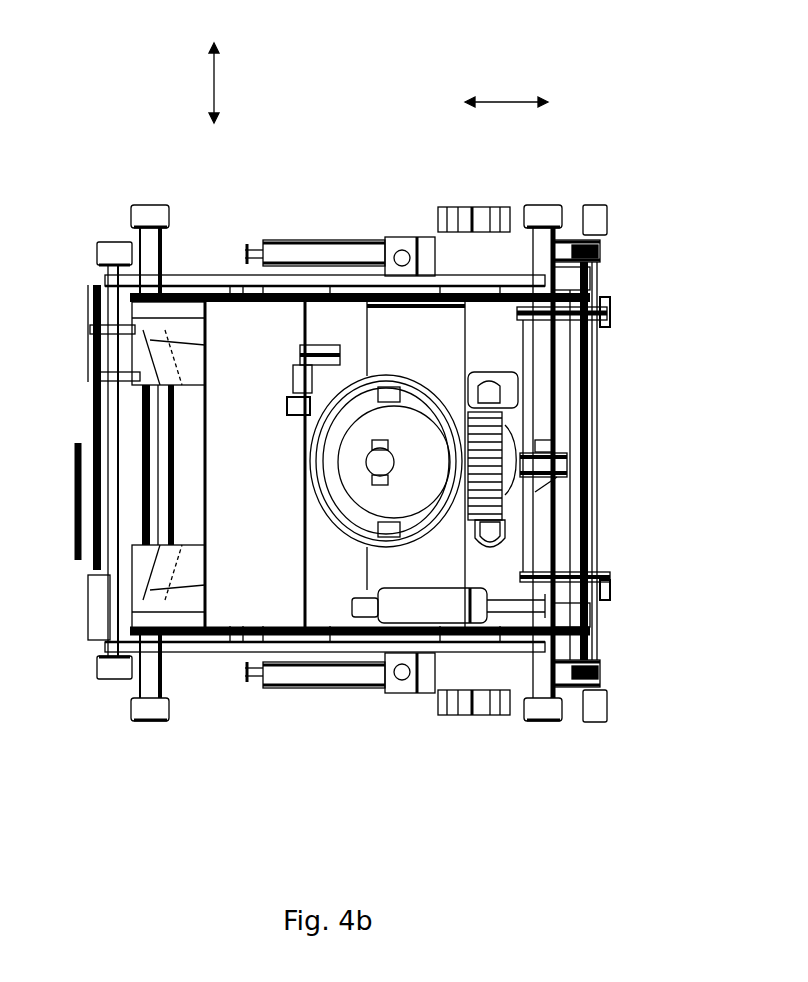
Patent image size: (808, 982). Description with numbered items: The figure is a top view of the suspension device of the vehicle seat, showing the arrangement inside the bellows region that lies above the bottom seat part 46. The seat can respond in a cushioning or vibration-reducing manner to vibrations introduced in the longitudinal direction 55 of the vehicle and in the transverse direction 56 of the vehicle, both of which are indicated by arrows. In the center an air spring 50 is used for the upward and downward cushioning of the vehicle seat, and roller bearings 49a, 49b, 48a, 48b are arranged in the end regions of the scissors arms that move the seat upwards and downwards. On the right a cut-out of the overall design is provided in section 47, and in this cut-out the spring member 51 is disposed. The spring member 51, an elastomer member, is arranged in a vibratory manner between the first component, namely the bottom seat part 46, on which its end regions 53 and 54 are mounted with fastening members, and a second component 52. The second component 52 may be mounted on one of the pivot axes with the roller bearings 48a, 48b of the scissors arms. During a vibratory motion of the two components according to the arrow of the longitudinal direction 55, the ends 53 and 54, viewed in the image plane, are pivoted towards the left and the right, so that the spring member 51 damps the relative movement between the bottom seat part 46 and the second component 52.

The bottom seat part 46 is at (523, 357).
The section 47 is at (575, 396).
The roller bearing 48a is at (543, 205).
The roller bearing 48b is at (544, 710).
The roller bearing 49a is at (150, 205).
The roller bearing 49b is at (152, 710).
The air spring 50 is at (347, 437).
The spring member 51 is at (575, 397).
The second component 52 is at (557, 433).
The end region 53 is at (477, 372).
The end region 54 is at (502, 535).
The longitudinal direction 55 is at (505, 100).
The transverse direction 56 is at (216, 83).